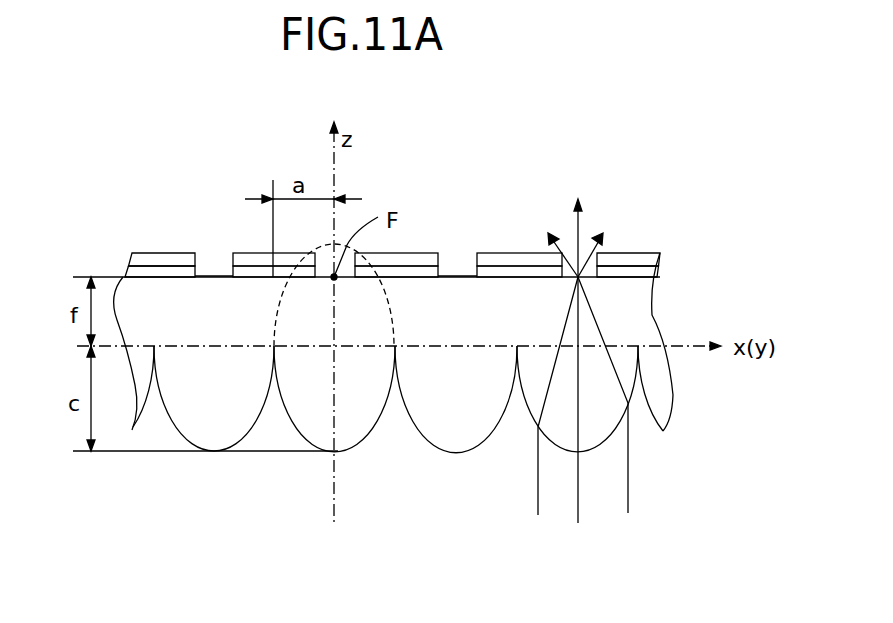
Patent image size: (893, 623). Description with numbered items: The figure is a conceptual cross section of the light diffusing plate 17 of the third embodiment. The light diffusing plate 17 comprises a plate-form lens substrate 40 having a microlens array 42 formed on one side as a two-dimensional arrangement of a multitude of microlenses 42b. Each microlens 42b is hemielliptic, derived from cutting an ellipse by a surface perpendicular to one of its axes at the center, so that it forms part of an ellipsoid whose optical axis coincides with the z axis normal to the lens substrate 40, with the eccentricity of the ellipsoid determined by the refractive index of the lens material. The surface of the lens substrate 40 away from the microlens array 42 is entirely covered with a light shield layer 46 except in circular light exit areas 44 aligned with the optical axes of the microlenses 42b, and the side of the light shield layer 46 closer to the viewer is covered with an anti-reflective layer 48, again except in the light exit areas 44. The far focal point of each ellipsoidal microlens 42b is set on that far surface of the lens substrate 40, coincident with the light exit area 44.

The light diffusing plate 17 is at (716, 227).
The lens substrate 40 is at (642, 320).
The microlens array 42 is at (403, 496).
The microlens 42b is at (217, 443).
The light exit area 44 is at (215, 262).
The light shield layer 46 is at (132, 273).
The anti-reflective layer 48 is at (148, 262).